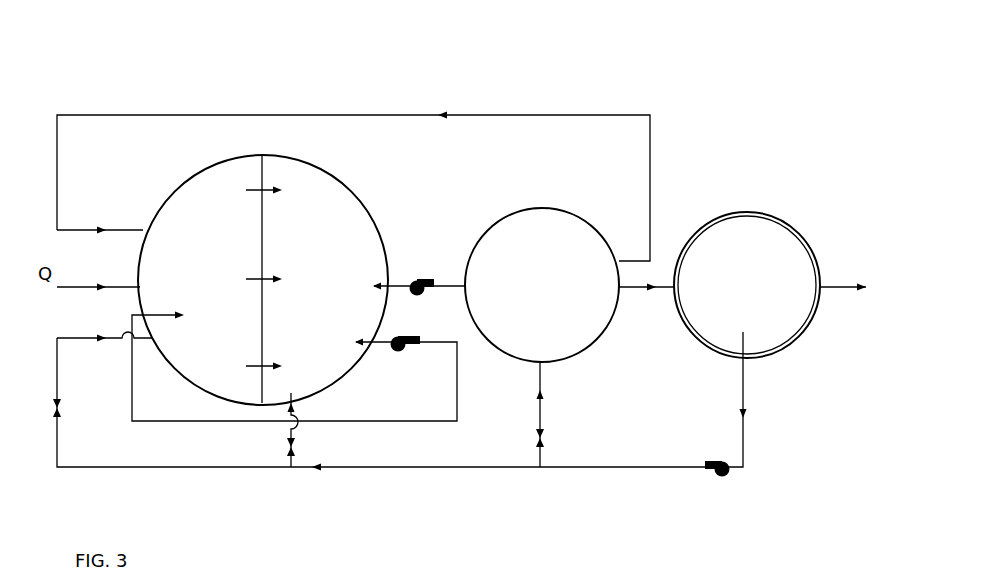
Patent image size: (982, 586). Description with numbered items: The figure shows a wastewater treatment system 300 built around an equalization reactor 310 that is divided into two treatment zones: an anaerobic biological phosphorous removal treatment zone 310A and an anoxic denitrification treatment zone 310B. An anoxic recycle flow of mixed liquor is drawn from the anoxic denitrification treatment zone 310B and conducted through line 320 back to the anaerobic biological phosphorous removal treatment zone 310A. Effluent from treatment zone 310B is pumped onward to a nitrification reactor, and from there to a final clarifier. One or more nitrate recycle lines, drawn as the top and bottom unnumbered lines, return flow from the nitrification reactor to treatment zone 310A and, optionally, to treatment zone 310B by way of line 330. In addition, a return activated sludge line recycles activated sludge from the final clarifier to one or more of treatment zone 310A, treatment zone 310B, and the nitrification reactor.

The wastewater treatment system 300 is at (434, 90).
The equalization reactor 310 is at (281, 280).
The anaerobic biological phosphorous removal treatment zone 310A is at (200, 280).
The anoxic denitrification treatment zone 310B is at (387, 188).
The line 320 is at (456, 376).
The line 330 is at (290, 433).